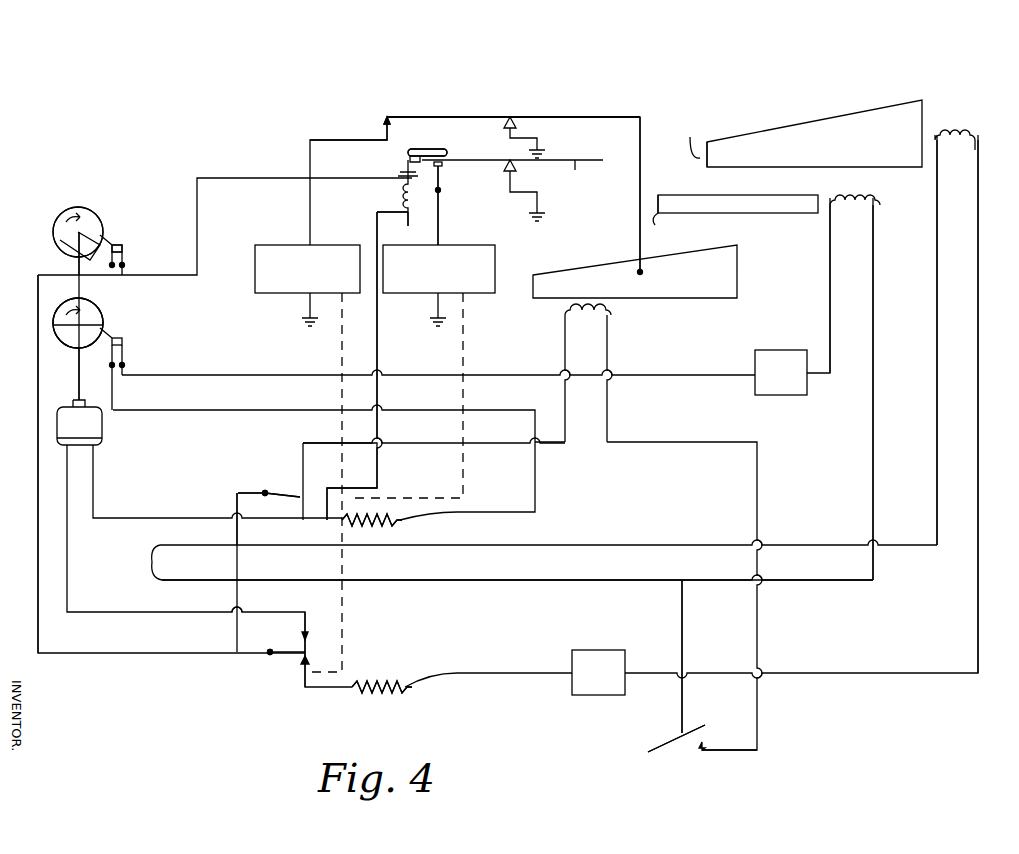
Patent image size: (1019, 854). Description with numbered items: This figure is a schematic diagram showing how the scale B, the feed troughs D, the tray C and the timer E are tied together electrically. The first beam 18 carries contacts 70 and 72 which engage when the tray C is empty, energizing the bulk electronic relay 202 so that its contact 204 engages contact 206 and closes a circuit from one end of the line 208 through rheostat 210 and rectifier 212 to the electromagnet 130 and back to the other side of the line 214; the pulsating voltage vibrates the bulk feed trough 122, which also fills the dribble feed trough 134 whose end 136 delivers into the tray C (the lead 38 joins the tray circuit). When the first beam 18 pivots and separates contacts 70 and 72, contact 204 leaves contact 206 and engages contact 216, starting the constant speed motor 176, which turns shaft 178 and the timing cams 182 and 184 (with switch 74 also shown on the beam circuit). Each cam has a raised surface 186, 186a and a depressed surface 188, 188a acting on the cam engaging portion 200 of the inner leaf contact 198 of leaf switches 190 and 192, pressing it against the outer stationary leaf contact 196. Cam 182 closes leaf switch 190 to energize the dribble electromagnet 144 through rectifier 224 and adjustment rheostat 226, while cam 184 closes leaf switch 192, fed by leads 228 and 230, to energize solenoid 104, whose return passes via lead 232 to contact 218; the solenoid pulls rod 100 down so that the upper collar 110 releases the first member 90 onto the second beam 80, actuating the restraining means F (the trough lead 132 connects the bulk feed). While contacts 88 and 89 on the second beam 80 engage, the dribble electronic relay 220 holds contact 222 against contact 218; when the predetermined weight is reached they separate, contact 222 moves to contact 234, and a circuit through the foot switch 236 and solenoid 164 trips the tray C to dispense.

The first beam 18 is at (540, 117).
The tray conductor 38 is at (638, 222).
The contact 70 is at (388, 115).
The contact 72 is at (385, 127).
The switch 74 is at (518, 122).
The second beam 80 is at (545, 190).
The contact 88 is at (446, 166).
The contact 89 is at (444, 186).
The first member 90 is at (422, 149).
The rod 100 is at (408, 220).
The solenoid 104 is at (402, 196).
The upper collar 110 is at (398, 172).
The bulk feed trough 122 is at (913, 110).
The electromagnet 130 is at (959, 390).
The bulk feed lead 132 is at (690, 135).
The dribble feed trough 134 is at (740, 212).
The end of dribble feed trough 136 is at (671, 219).
The electromagnet 144 is at (860, 198).
The solenoid 164 is at (584, 318).
The constant speed motor 176 is at (104, 433).
The shaft 178 is at (78, 380).
The timing cam 182 is at (100, 322).
The timing cam 184 is at (88, 220).
The raised surface 186 is at (92, 306).
The raised surface 186a is at (80, 207).
The depressed surface 188 is at (70, 342).
The depressed surface 188a is at (56, 243).
The leaf switch 190 is at (126, 362).
The leaf switch 192 is at (126, 259).
The outer stationary leaf contact 196 is at (124, 249).
The inner leaf contact 198 is at (95, 254).
The cam engaging portion 200 is at (115, 243).
The bulk electronic relay 202 is at (278, 293).
The bulk electronic relay contact 204 is at (308, 652).
The contact 206 is at (310, 662).
The line 208 is at (190, 582).
The rheostat 210 is at (378, 686).
The rectifier 212 is at (605, 694).
The line 214 is at (225, 547).
The contact 216 is at (308, 638).
The contact 218 is at (298, 498).
The dribble electronic relay 220 is at (470, 290).
The contact 222 is at (303, 498).
The rectifier 224 is at (776, 352).
The adjustment rheostat 226 is at (375, 511).
The lead 228 is at (246, 610).
The lead 230 is at (38, 480).
The lead 232 is at (378, 341).
The contact 234 is at (303, 490).
The foot switch 236 is at (704, 738).
The scale B is at (478, 180).
The tray C is at (702, 300).
The feeder D is at (670, 190).
The timer E is at (45, 310).
The restraining means F is at (402, 152).